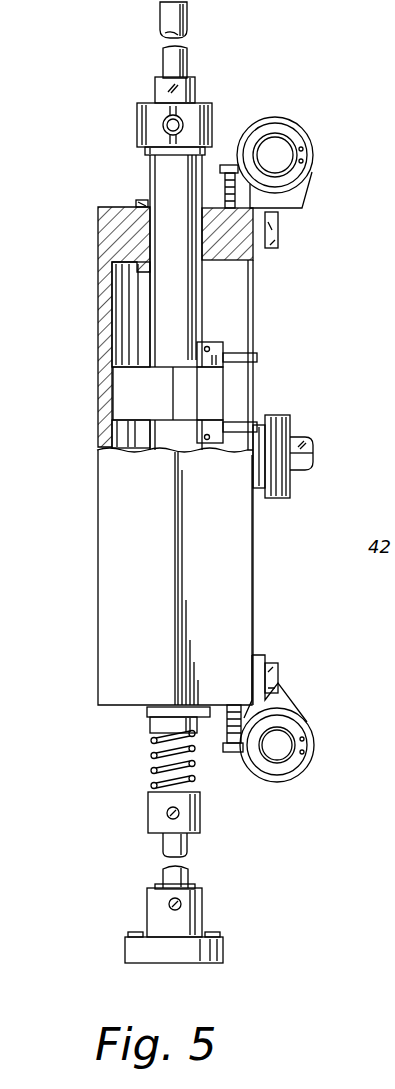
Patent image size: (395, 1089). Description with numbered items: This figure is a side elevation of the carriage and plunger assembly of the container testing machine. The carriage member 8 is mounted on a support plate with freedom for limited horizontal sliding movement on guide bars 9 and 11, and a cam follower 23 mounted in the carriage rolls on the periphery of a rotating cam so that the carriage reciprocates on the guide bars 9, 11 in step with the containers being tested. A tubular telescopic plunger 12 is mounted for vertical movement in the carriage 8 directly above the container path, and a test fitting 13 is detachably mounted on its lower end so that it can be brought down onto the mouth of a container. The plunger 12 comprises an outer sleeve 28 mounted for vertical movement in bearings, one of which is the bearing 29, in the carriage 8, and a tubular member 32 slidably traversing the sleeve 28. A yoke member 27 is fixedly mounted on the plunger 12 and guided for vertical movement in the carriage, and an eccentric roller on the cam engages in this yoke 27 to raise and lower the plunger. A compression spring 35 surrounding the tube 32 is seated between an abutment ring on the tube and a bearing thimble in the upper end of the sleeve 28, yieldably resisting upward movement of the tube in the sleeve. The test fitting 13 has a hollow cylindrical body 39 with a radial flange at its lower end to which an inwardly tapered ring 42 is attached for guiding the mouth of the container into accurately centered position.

The carriage member 8 is at (96, 548).
The guide bar 9 is at (282, 745).
The guide bar 11 is at (280, 152).
The tubular telescopic plunger 12 is at (160, 722).
The test fitting 13 is at (204, 918).
The cam follower 23 is at (285, 416).
The yoke member 27 is at (258, 357).
The outer sleeve 28 is at (155, 332).
The bearing 29 is at (138, 202).
The tubular member 32 is at (163, 64).
The compression spring 35 is at (152, 752).
The hollow cylindrical body 39 is at (155, 916).
The inwardly tapered ring 42 is at (140, 950).